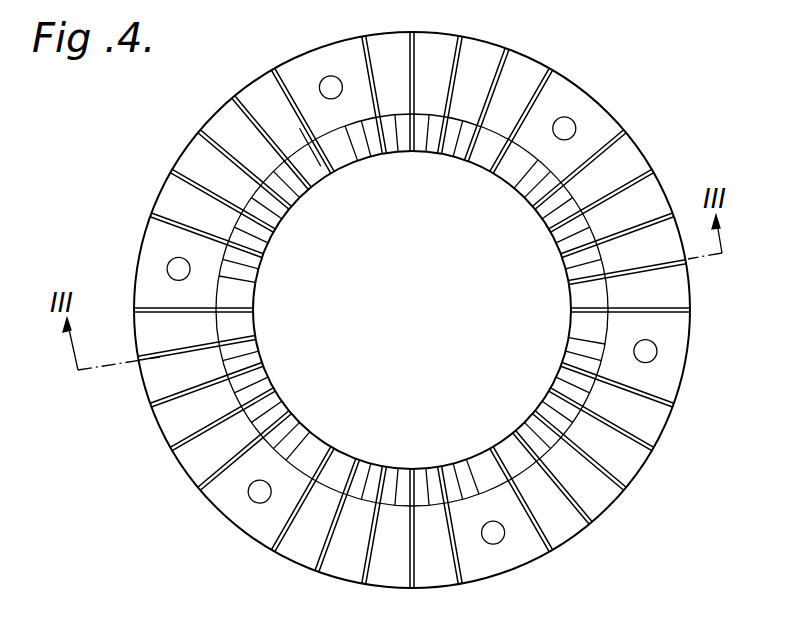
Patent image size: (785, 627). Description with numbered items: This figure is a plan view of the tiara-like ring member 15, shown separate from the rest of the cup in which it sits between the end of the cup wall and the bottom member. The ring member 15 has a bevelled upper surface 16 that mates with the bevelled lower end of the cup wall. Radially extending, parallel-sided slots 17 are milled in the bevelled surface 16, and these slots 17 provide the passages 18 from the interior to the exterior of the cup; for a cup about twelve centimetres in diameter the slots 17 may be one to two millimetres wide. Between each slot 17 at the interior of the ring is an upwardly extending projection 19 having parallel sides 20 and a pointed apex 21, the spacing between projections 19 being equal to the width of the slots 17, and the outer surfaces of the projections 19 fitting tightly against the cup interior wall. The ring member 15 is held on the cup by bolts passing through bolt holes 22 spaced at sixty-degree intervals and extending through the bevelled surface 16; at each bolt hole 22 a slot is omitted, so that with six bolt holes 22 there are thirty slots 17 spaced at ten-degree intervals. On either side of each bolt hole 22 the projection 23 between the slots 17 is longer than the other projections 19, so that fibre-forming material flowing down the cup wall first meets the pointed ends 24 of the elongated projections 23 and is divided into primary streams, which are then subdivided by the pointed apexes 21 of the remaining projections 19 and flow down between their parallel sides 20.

The tiara-like ring member 15 is at (184, 150).
The bevelled upper surface 16 is at (255, 88).
The slots 17 is at (170, 218).
The passages 18 is at (198, 131).
The projection 19 is at (323, 177).
The parallel sides 20 is at (271, 232).
The pointed apex 21 is at (297, 201).
The bolt holes 22 is at (167, 273).
The elongated projection 23 is at (248, 297).
The pointed ends 24 is at (252, 278).